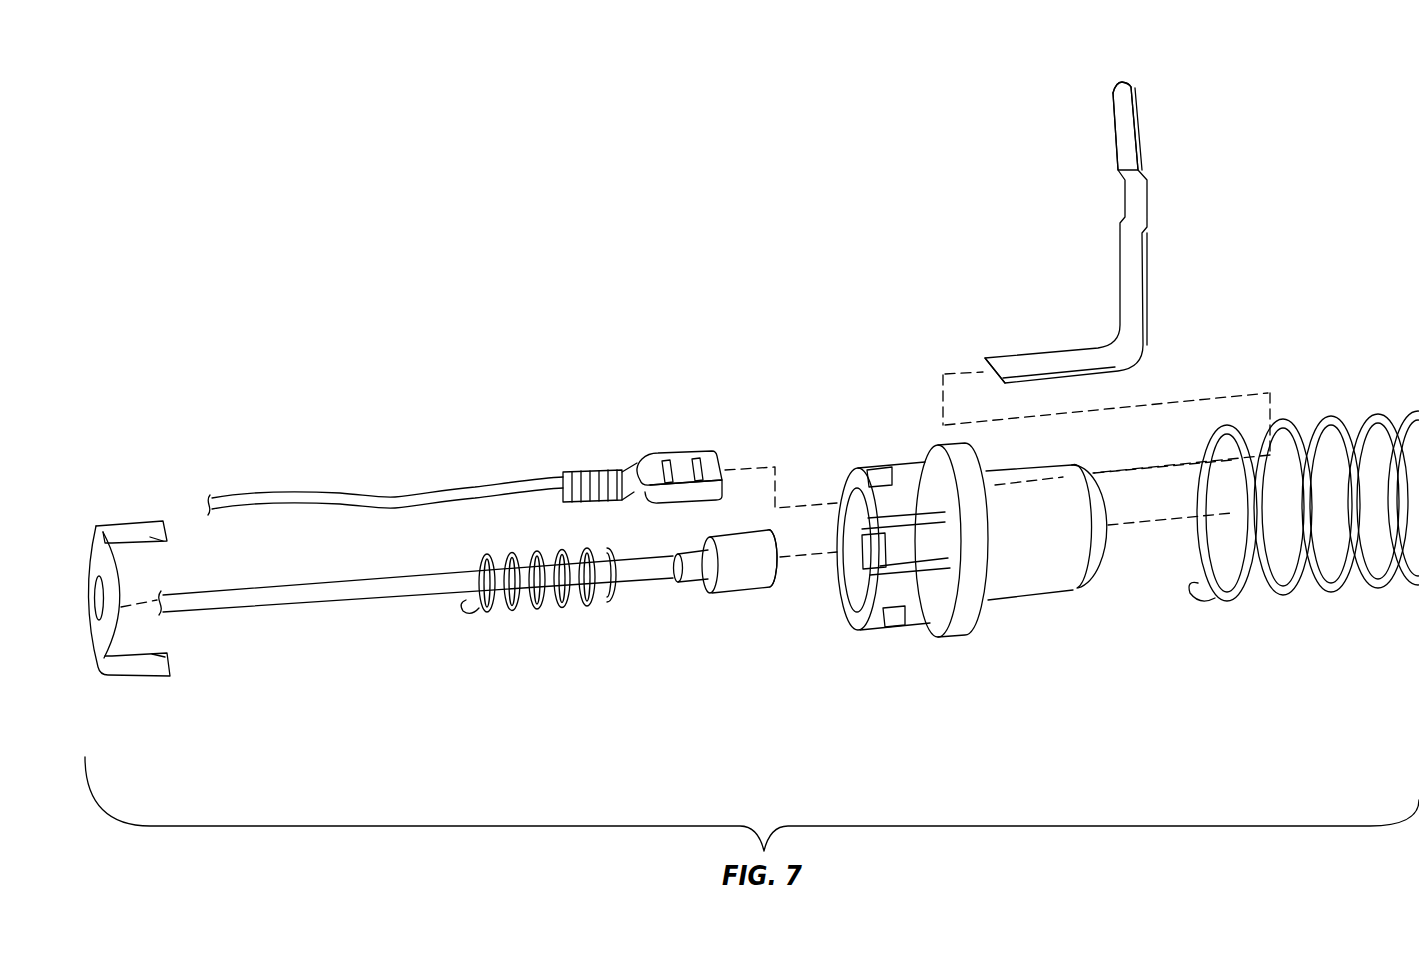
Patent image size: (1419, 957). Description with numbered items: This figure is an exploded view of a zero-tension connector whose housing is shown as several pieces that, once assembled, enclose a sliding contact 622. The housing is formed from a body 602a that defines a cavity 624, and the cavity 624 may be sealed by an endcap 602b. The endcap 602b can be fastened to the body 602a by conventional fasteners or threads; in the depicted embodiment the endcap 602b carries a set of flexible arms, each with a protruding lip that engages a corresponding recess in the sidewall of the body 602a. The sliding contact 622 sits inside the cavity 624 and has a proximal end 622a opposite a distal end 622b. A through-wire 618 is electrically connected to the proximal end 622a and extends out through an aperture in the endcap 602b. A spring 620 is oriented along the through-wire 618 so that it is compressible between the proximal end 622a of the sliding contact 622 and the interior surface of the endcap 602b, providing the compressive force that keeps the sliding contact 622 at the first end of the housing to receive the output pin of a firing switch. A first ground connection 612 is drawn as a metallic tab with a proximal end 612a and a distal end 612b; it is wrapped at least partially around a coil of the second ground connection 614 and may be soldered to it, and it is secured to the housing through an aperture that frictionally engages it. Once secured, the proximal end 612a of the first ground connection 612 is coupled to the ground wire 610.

The body 602a is at (1007, 588).
The endcap 602b is at (110, 537).
The ground wire 610 is at (347, 503).
The first ground connection 612 is at (1076, 258).
The proximal end 612a is at (990, 346).
The distal end 612b is at (1144, 86).
The second ground connection 614 is at (1210, 597).
The through-wire 618 is at (283, 600).
The spring 620 is at (523, 610).
The sliding contact 622 is at (720, 523).
The proximal end 622a is at (696, 539).
The distal end 622b is at (779, 538).
The cavity 624 is at (861, 581).